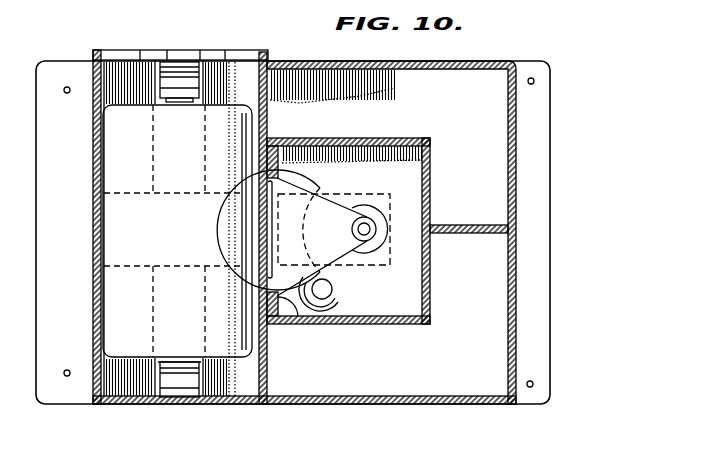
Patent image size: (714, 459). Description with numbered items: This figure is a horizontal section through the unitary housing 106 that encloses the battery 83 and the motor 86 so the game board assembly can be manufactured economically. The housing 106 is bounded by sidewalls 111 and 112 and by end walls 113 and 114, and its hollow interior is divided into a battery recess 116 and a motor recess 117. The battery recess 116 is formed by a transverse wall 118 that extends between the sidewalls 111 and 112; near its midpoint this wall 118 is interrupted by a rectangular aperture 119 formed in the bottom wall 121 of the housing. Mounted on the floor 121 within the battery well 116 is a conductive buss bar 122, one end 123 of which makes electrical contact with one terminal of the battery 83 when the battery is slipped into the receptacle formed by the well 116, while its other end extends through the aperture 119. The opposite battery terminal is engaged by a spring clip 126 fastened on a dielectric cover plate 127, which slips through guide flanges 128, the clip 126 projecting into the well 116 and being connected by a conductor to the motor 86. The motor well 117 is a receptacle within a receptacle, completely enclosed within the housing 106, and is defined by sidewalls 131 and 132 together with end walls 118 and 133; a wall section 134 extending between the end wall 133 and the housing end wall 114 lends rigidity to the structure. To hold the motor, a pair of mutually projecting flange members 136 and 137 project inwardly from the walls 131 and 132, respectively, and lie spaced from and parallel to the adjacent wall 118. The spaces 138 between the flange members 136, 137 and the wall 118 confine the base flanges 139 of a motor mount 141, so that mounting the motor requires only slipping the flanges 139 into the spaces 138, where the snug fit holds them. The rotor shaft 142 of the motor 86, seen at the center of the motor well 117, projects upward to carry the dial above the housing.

The battery 83 is at (140, 322).
The motor 86 is at (404, 271).
The unitary housing 106 is at (556, 290).
The sidewall 111 is at (463, 61).
The sidewall 112 is at (337, 404).
The end wall 113 is at (93, 240).
The end wall 114 is at (516, 248).
The battery recess 116 is at (224, 404).
The motor recess 117 is at (408, 309).
The transverse wall 118 is at (270, 100).
The rectangular aperture 119 is at (215, 265).
The bottom wall 121 is at (466, 381).
The conductive buss bar 122 is at (200, 363).
The end of buss bar 123 is at (178, 389).
The spring clip 126 is at (172, 82).
The dielectric cover plate 127 is at (205, 60).
The guide flanges 128 is at (112, 50).
The sidewall of motor well 131 is at (382, 138).
The sidewall of motor well 132 is at (378, 318).
The end wall of motor well 133 is at (431, 170).
The wall section 134 is at (469, 234).
The flange member 136 is at (276, 161).
The flange member 137 is at (296, 312).
The spaces 138 is at (270, 324).
The base flanges 139 is at (272, 140).
The motor mount 141 is at (306, 233).
The rotor shaft 142 is at (367, 241).